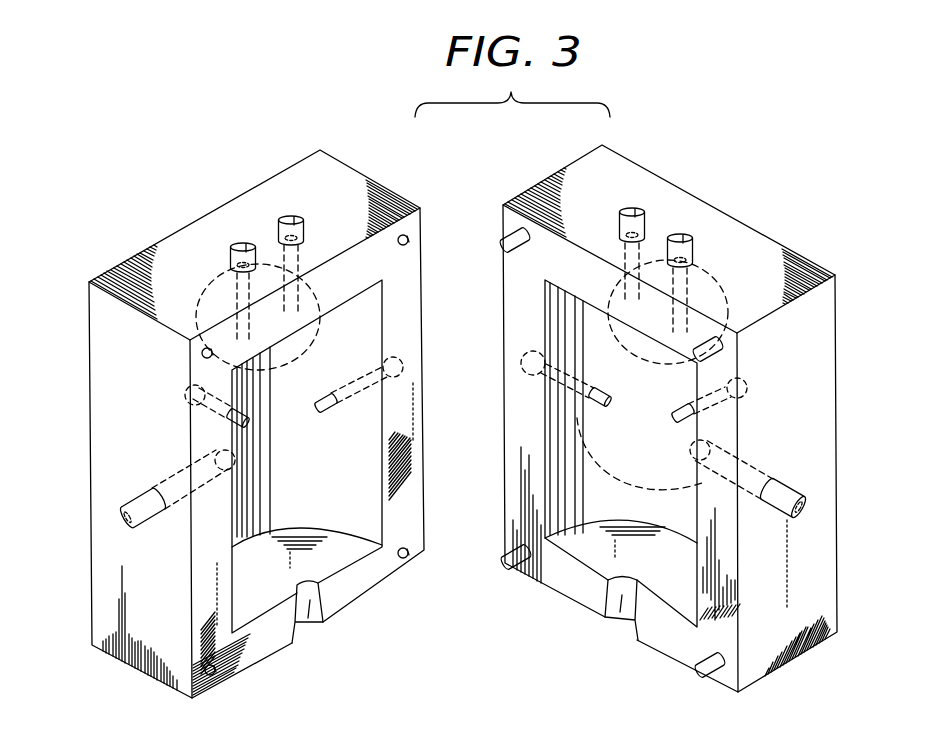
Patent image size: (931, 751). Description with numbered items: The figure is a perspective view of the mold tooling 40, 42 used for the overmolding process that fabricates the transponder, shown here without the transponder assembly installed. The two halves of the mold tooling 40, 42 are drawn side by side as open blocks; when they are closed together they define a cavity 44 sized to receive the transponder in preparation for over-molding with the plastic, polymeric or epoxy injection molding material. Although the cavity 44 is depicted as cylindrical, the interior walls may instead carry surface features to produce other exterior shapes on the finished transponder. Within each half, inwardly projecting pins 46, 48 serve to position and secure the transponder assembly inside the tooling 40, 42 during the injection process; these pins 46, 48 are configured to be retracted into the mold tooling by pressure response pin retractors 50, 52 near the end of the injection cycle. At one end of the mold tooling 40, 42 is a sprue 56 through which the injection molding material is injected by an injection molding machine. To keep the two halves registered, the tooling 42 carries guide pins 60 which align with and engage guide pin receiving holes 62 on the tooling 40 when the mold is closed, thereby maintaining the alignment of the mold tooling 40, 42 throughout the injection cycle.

The mold tooling half 40 is at (335, 187).
The mold tooling half 42 is at (597, 193).
The cavity 44 is at (358, 458).
The inwardly projecting pins 46 is at (343, 403).
The inwardly projecting pins 48 is at (268, 370).
The pressure response pin retractor 50 is at (130, 533).
The pressure response pin retractor 52 is at (291, 215).
The sprue 56 is at (313, 620).
The guide pins 60 is at (504, 248).
The guide pin receiving holes 62 is at (412, 240).